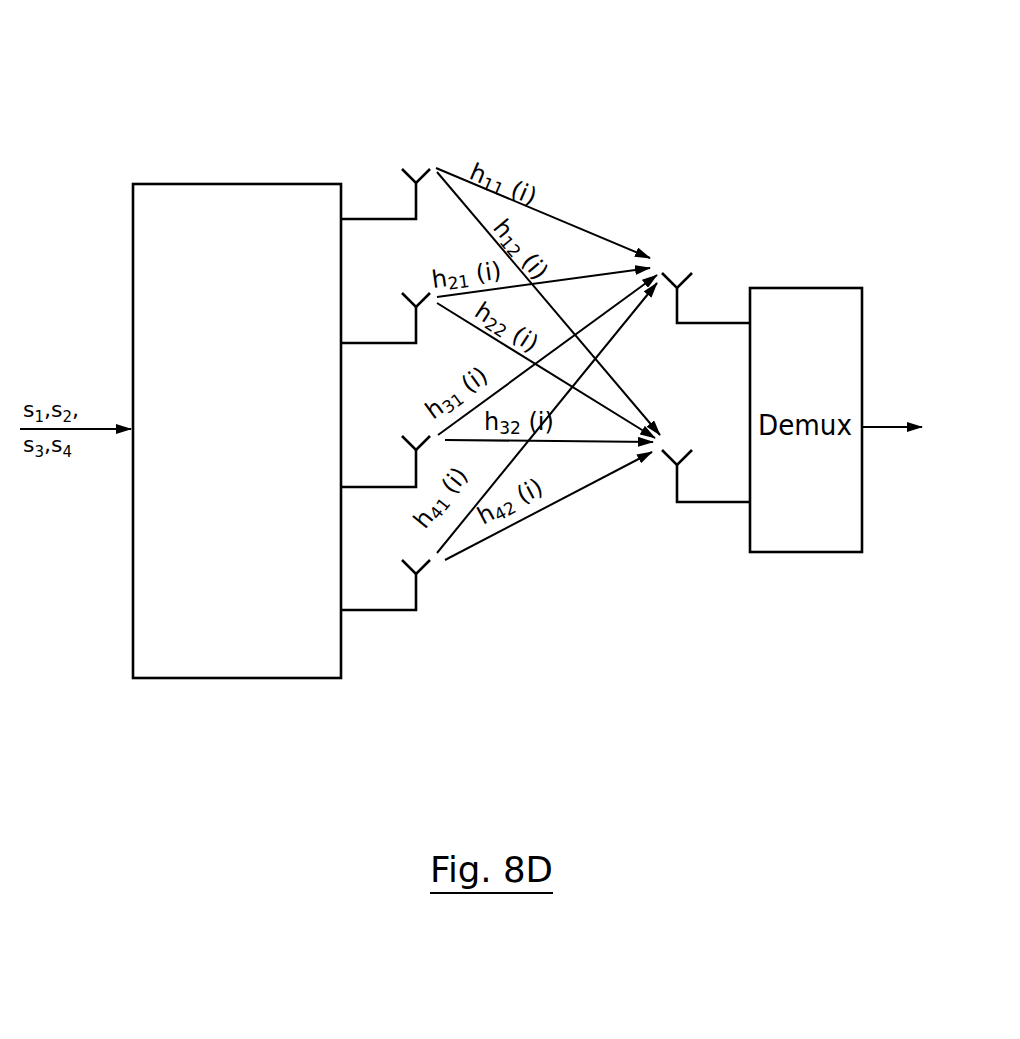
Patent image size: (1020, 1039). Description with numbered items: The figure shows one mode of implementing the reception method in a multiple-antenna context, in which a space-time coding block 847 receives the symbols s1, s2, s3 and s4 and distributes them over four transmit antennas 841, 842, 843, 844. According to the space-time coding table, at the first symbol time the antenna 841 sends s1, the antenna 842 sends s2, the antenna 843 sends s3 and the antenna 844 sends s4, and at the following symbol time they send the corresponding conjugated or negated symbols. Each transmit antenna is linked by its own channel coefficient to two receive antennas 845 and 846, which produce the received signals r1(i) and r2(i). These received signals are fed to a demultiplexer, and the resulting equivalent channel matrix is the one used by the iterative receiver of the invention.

The antenna 841 is at (413, 197).
The antenna 842 is at (415, 319).
The antenna 843 is at (377, 487).
The antenna 844 is at (417, 593).
The first receive antenna 845 is at (682, 292).
The second receive antenna 846 is at (688, 503).
The space-time coding block 847 is at (227, 200).